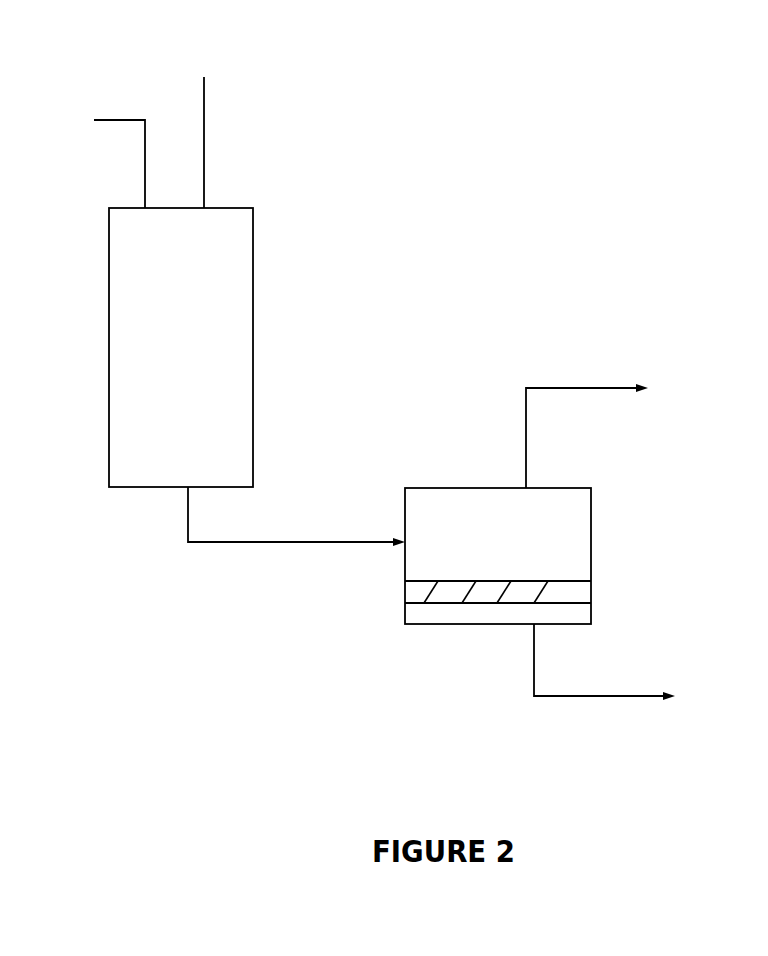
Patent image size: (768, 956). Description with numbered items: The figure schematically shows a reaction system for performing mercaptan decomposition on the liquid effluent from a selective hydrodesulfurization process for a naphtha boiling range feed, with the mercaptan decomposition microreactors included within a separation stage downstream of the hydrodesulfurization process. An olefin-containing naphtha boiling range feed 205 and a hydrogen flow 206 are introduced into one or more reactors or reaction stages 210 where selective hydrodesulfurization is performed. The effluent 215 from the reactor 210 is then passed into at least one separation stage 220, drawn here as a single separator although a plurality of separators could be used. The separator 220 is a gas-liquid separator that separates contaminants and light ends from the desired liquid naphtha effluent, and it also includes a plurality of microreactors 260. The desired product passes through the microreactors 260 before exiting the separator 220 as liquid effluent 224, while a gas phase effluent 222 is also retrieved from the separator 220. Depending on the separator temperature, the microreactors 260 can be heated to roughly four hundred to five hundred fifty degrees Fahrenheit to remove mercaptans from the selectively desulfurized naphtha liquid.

The olefin-containing naphtha boiling range feed 205 is at (108, 102).
The hydrogen flow 206 is at (238, 145).
The reactor 210 is at (228, 320).
The effluent 215 is at (296, 502).
The separation stage 220 is at (573, 535).
The microreactors 260 is at (582, 588).
The gas phase effluent 222 is at (619, 367).
The liquid effluent 224 is at (619, 676).